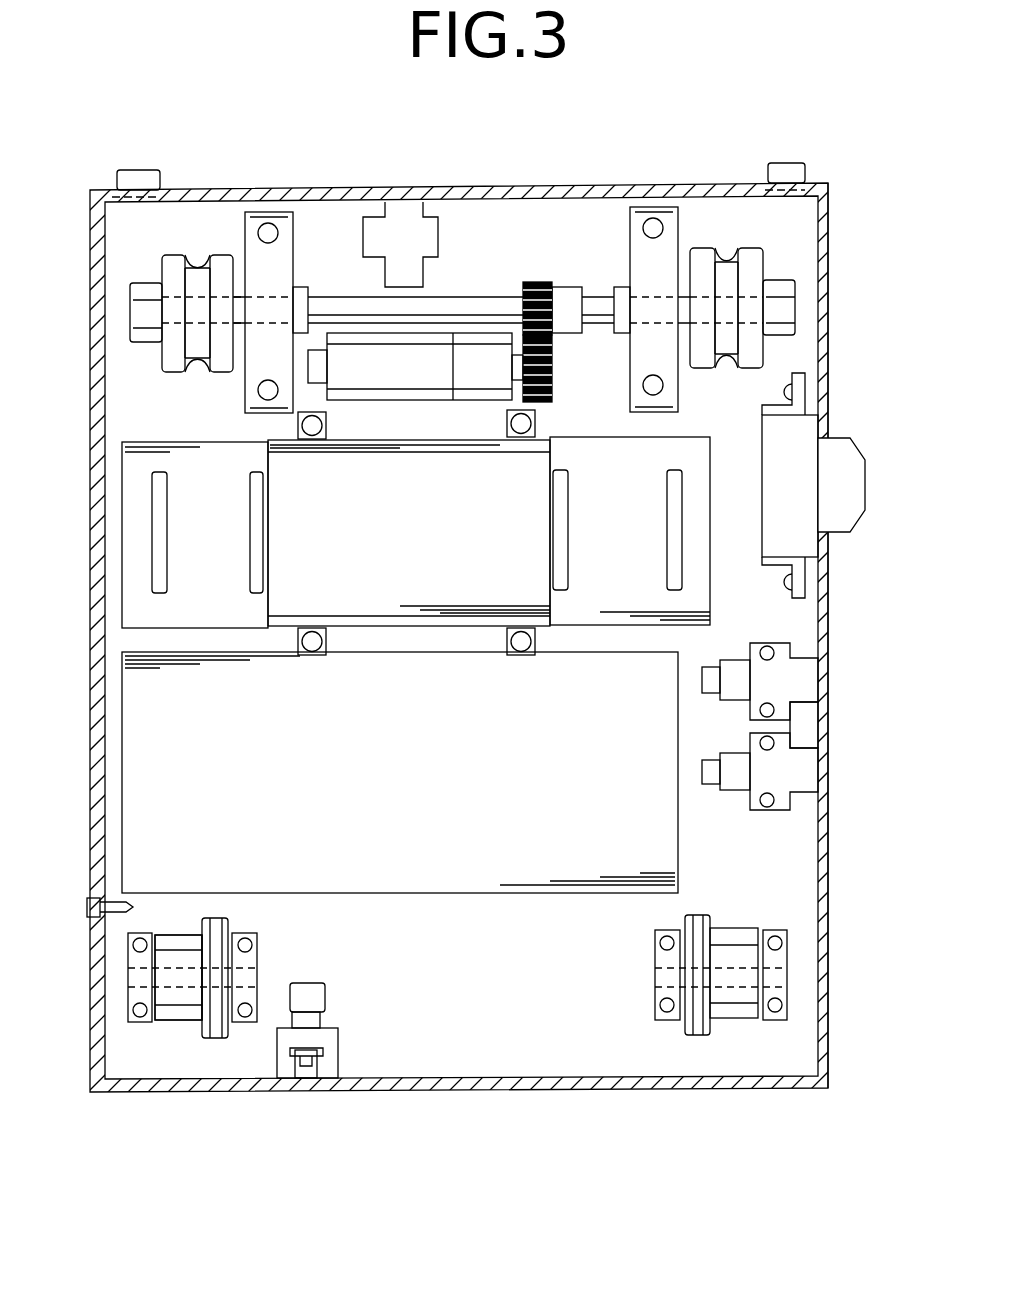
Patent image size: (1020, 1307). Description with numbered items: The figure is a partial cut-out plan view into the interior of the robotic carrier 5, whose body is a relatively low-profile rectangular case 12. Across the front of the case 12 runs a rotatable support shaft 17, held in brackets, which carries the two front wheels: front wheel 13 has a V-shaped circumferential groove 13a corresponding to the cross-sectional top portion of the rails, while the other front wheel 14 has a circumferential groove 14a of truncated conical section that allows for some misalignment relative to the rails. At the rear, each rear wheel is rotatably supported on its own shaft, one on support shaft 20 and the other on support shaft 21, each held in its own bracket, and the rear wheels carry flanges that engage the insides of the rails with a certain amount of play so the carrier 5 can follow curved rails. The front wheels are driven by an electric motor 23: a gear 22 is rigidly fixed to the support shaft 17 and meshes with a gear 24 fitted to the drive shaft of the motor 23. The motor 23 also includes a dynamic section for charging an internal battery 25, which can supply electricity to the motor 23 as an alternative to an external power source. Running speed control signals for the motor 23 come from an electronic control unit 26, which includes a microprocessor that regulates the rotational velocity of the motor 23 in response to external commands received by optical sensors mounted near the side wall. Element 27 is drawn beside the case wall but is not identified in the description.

The robotic carrier 5 is at (825, 181).
The rectangular case 12 is at (826, 306).
The front wheel 13 is at (752, 270).
The V-shaped circumferential groove 13a is at (728, 278).
The front wheel 14 is at (177, 257).
The circumferential groove 14a is at (198, 277).
The support shaft 17 is at (502, 302).
The support shaft 20 is at (185, 1000).
The support shaft 21 is at (787, 977).
The gear 22 is at (538, 283).
The electric motor 23 is at (438, 350).
The gear 24 is at (552, 380).
The internal battery 25 is at (290, 560).
The electronic control unit 26 is at (140, 800).
The connector 27 is at (845, 452).